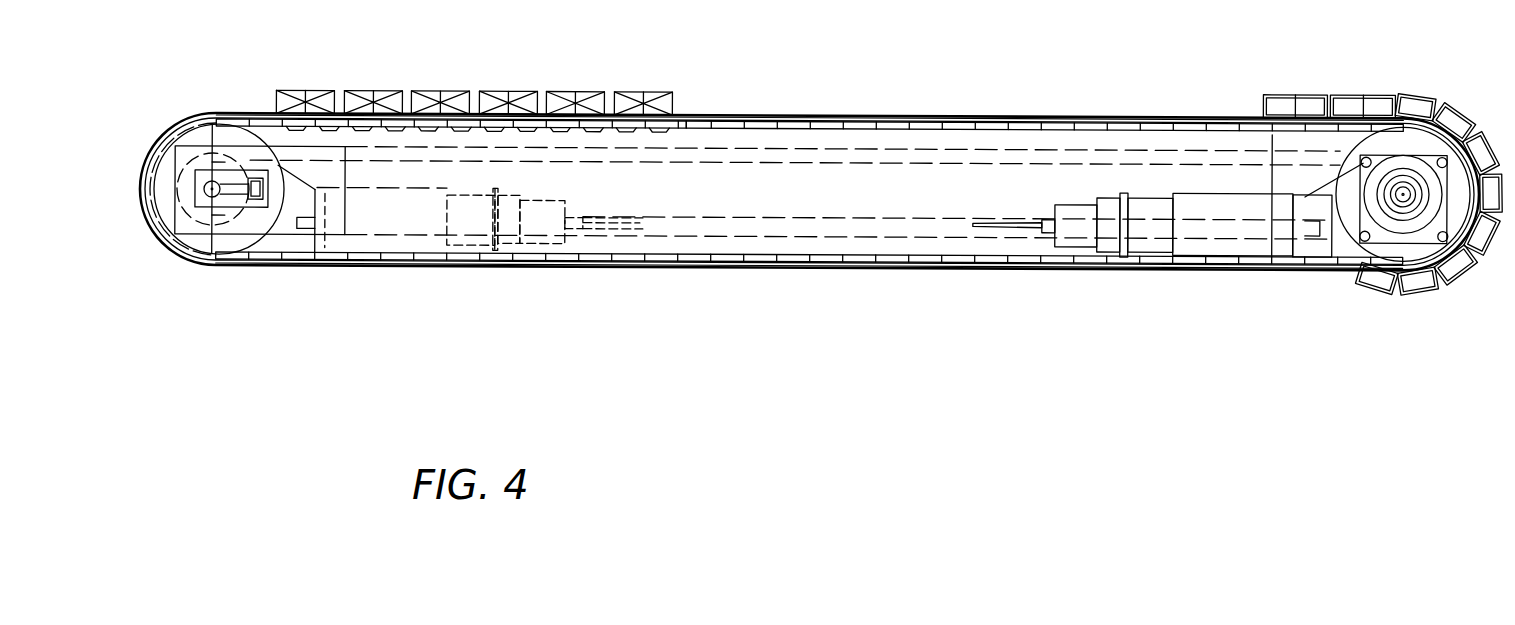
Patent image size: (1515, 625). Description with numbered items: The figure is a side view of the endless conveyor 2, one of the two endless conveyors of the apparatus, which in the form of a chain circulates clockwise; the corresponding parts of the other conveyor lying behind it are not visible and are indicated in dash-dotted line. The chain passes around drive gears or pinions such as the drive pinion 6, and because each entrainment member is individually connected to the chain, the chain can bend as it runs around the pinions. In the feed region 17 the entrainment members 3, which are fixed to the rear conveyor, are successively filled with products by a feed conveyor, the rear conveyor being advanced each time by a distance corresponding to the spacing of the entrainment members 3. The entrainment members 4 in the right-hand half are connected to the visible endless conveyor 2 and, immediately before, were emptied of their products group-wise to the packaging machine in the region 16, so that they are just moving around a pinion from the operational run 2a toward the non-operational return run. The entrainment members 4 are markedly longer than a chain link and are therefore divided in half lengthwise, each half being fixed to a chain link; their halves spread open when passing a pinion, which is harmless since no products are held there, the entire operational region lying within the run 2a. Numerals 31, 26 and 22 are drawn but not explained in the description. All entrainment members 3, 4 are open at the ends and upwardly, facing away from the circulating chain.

The endless conveyor 2 is at (538, 306).
The operational run 2a is at (842, 115).
The entrainment members 3 is at (660, 90).
The carrier holders 31 is at (381, 67).
The feed region 17 is at (540, 74).
The region 16 is at (1204, 83).
The lower belt run 26 is at (742, 260).
The entrainment members 4 is at (1378, 100).
The drive gear or pinion 6 is at (1350, 232).
The actuating cylinder 22 is at (830, 202).